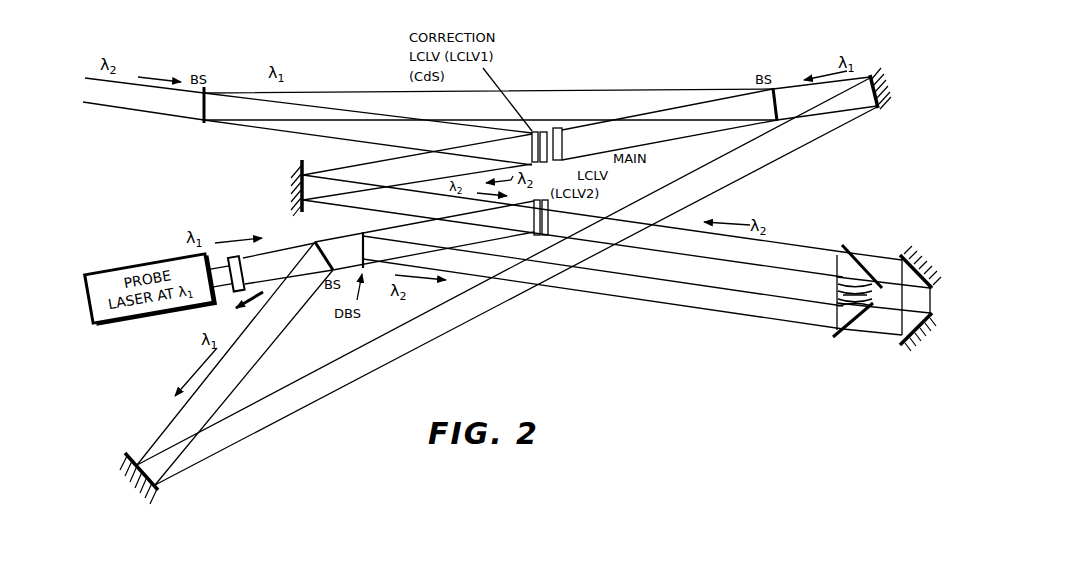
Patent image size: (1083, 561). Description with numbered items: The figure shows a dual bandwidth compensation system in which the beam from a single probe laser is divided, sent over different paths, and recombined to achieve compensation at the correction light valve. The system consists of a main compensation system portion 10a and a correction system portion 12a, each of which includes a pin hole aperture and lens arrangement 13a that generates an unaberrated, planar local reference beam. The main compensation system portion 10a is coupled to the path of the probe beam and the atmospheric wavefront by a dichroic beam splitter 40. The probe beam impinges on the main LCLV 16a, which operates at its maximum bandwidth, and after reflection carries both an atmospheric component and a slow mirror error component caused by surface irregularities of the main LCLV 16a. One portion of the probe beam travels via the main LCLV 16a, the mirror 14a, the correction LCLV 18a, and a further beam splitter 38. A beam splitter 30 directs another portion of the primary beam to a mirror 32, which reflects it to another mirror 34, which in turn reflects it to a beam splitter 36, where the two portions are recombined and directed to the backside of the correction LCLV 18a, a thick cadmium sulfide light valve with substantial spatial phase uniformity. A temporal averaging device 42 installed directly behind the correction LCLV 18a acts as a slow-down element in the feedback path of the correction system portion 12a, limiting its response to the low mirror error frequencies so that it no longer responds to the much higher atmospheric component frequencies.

The main compensation system portion 10a is at (822, 215).
The correction system portion 12a is at (705, 80).
The pin hole aperture and lens arrangement 13a is at (826, 290).
The mirror 14a is at (299, 178).
The main LCLV 16a is at (541, 237).
The correction LCLV 18a is at (544, 131).
The beam splitter 30 is at (315, 242).
The mirror 32 is at (158, 492).
The mirror 34 is at (878, 103).
The beam splitter 36 is at (777, 103).
The beam splitter 38 is at (203, 108).
The dichroic beam splitter 40 is at (363, 252).
The temporal averaging device 42 is at (564, 143).